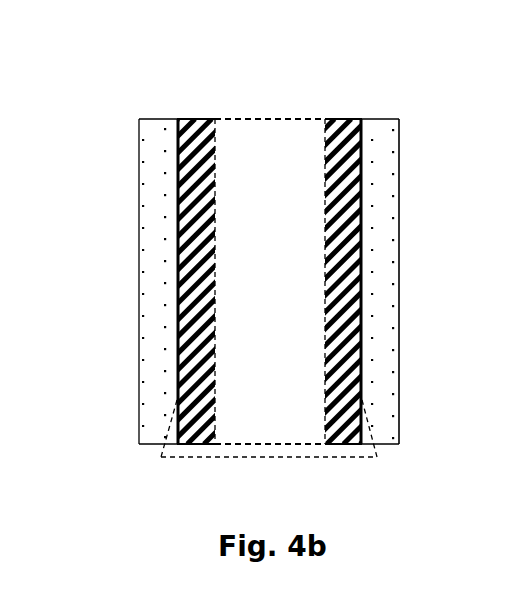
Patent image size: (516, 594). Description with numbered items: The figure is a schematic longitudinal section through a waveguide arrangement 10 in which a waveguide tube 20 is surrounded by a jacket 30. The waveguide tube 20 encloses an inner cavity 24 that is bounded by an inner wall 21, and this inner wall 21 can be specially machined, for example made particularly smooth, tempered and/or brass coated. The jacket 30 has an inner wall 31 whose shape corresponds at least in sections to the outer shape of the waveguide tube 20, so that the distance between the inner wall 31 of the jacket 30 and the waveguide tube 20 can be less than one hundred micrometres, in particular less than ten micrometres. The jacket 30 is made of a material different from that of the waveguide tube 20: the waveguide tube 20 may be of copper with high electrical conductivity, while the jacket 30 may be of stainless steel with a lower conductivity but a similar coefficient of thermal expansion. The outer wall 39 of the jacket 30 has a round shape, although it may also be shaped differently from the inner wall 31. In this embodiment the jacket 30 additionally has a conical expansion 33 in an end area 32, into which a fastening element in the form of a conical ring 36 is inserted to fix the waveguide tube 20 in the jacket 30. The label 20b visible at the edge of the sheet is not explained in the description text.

The waveguide arrangement 10 is at (387, 88).
The waveguide tube 20 is at (362, 292).
The housing part section 20b is at (497, 347).
The inner wall 21 is at (311, 202).
The inner cavity 24 is at (245, 265).
The jacket 30 is at (138, 295).
The inner wall of the jacket 31 is at (347, 165).
The end area 32 is at (115, 444).
The conical expansion 33 is at (170, 425).
The conical ring 36 is at (377, 457).
The outer wall of the jacket 39 is at (409, 179).